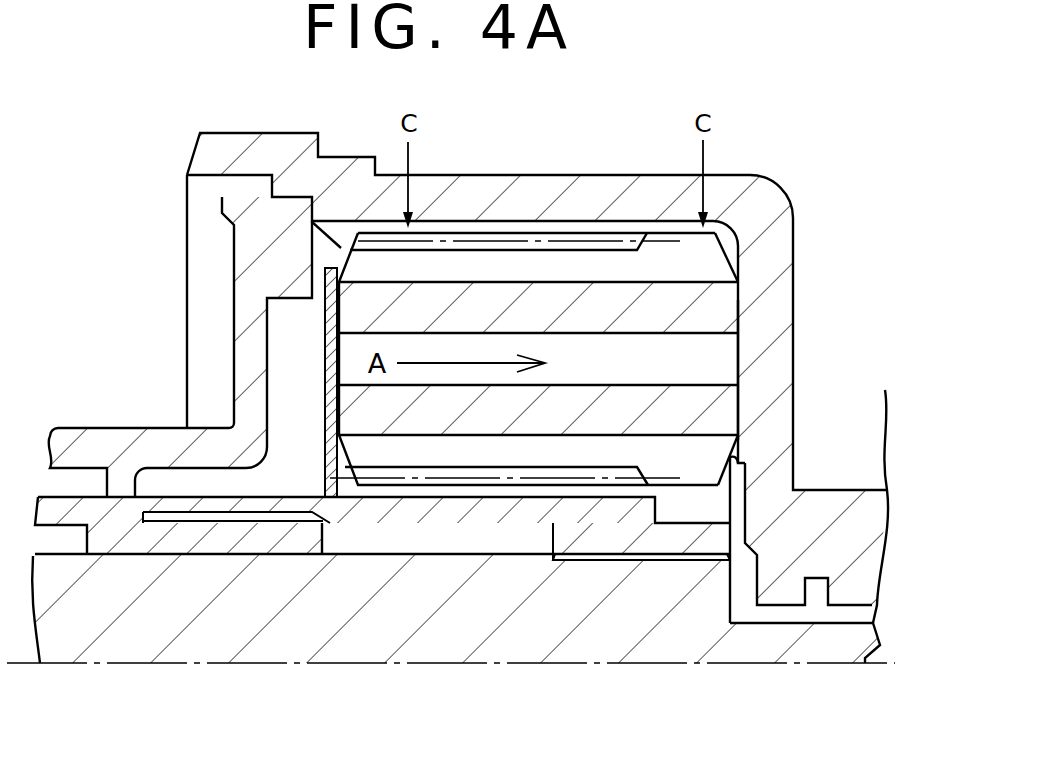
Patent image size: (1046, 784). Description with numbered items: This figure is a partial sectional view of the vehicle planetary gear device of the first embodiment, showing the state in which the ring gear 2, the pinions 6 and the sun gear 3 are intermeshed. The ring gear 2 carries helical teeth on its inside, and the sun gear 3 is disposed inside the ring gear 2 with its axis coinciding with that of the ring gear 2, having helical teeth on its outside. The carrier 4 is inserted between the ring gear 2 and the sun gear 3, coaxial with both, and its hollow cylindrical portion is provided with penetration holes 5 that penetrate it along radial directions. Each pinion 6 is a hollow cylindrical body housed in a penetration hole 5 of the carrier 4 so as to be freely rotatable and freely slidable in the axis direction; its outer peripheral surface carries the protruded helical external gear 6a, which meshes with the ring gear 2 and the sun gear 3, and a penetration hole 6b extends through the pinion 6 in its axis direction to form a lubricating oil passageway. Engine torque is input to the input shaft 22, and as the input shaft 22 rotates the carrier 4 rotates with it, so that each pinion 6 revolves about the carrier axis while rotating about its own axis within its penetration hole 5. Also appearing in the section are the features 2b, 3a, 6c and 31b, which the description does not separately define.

The ring gear 2 is at (797, 281).
The inner peripheral surface of housing 2b is at (647, 228).
The sun gear 3 is at (370, 510).
The projection of base 3a is at (325, 495).
The carrier 4 is at (665, 535).
The penetration hole 5 is at (745, 463).
The pinion 6 is at (350, 398).
The helical external gear 6a is at (733, 238).
The penetration hole 6b is at (360, 347).
The lower end edge of rotor 6c is at (738, 442).
The input shaft 22 is at (72, 640).
The inner wall portion 31b is at (740, 365).